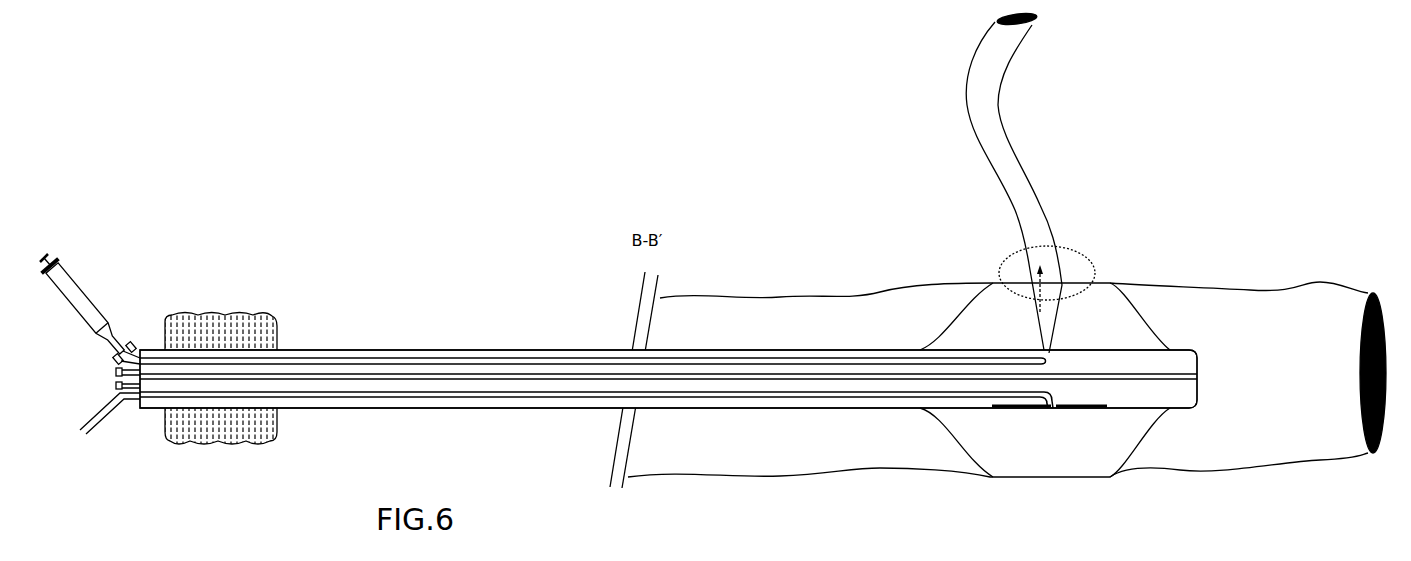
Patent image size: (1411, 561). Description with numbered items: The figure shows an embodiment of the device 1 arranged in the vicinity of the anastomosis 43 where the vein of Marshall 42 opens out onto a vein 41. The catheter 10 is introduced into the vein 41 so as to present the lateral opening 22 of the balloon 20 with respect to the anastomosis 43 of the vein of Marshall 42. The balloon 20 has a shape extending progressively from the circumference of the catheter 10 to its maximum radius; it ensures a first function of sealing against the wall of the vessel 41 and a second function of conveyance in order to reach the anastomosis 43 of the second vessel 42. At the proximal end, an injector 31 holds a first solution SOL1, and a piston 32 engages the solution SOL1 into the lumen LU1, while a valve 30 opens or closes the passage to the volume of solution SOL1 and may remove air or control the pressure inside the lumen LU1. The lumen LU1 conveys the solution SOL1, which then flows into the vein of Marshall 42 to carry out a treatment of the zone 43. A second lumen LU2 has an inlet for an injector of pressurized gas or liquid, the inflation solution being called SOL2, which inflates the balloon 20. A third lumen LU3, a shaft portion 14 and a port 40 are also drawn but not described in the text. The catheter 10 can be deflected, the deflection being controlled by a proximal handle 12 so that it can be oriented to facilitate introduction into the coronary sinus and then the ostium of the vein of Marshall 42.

The device 1 is at (910, 258).
The catheter 10 is at (478, 415).
The proximal handle 12 is at (268, 430).
The catheter shaft 14 is at (288, 340).
The balloon 20 is at (960, 323).
The lateral opening 22 is at (1053, 290).
The valve 30 is at (130, 345).
The injector 31 is at (68, 312).
The piston 32 is at (42, 256).
The port 40 is at (115, 383).
The vein 41 is at (1255, 300).
The vein of Marshall 42 is at (1010, 142).
The anastomosis 43 is at (1070, 250).
The lumen LU1 is at (803, 362).
The second lumen LU2 is at (687, 393).
The third lumen LU3 is at (775, 380).
The first solution SOL1 is at (74, 285).
The inflation solution SOL2 is at (75, 438).